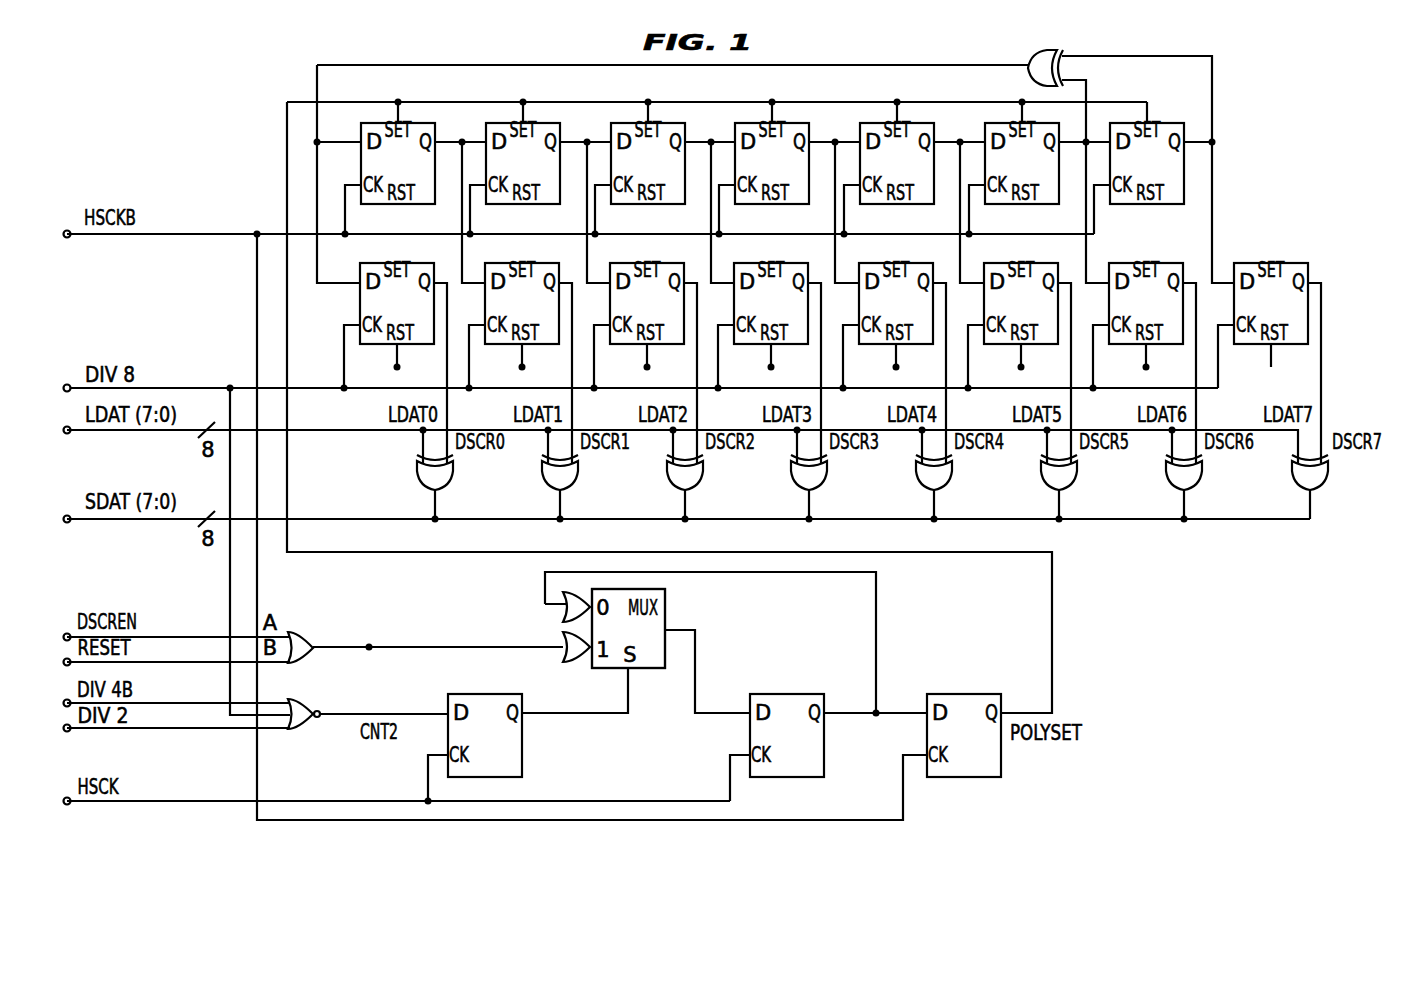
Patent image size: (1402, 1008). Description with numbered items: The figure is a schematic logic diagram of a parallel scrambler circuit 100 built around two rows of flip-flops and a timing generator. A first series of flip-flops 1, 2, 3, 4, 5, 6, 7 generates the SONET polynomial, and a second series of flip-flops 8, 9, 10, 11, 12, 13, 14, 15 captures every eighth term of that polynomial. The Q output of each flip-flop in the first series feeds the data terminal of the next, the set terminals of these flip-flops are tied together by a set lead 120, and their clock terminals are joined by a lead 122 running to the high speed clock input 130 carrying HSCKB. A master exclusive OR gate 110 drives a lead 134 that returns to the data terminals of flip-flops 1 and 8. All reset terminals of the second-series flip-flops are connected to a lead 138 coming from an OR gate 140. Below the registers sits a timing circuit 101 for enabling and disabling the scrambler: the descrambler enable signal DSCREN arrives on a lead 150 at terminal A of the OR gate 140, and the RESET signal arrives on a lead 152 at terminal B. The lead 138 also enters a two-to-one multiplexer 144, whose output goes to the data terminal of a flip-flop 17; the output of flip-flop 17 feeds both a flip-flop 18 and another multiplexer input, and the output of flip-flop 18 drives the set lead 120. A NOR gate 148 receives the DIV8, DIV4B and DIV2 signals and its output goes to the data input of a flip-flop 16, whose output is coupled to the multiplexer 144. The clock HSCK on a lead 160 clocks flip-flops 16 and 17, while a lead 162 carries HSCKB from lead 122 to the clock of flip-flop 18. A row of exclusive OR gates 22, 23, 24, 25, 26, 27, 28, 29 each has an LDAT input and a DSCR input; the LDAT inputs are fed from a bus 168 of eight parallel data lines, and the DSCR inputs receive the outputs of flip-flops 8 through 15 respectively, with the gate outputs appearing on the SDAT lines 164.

The flip-flop 1 is at (392, 173).
The flip-flop 2 is at (517, 173).
The flip-flop 3 is at (642, 173).
The flip-flop 4 is at (766, 173).
The flip-flop 5 is at (891, 173).
The flip-flop 6 is at (1016, 173).
The flip-flop 7 is at (1141, 173).
The flip-flop 8 is at (391, 313).
The flip-flop 9 is at (516, 313).
The flip-flop 10 is at (638, 313).
The flip-flop 11 is at (762, 313).
The flip-flop 12 is at (887, 313).
The flip-flop 13 is at (1012, 313).
The flip-flop 14 is at (1137, 313).
The flip-flop 15 is at (1262, 313).
The flip-flop 16 is at (478, 743).
The flip-flop 17 is at (781, 743).
The flip-flop 18 is at (956, 743).
The exclusive OR gate 22 is at (447, 478).
The exclusive OR gate 23 is at (572, 478).
The exclusive OR gate 24 is at (697, 478).
The exclusive OR gate 25 is at (821, 478).
The exclusive OR gate 26 is at (946, 478).
The exclusive OR gate 27 is at (1071, 478).
The exclusive OR gate 28 is at (1196, 478).
The exclusive OR gate 29 is at (1322, 478).
The scrambler circuit 100 is at (1117, 573).
The timing circuit 101 is at (432, 678).
The master exclusive OR gate 110 is at (1033, 82).
The lead 120 is at (287, 155).
The lead 122 is at (408, 239).
The high speed clock input 130 is at (70, 240).
The lead 134 is at (921, 65).
The lead 138 is at (392, 648).
The OR gate 140 is at (302, 633).
The multiplexer 144 is at (613, 677).
The NOR gate 148 is at (303, 731).
The lead 150 is at (180, 637).
The lead 152 is at (165, 662).
The lead 160 is at (122, 801).
The lead 162 is at (363, 820).
The SDAT bus 164 is at (128, 519).
The bus 168 is at (128, 430).